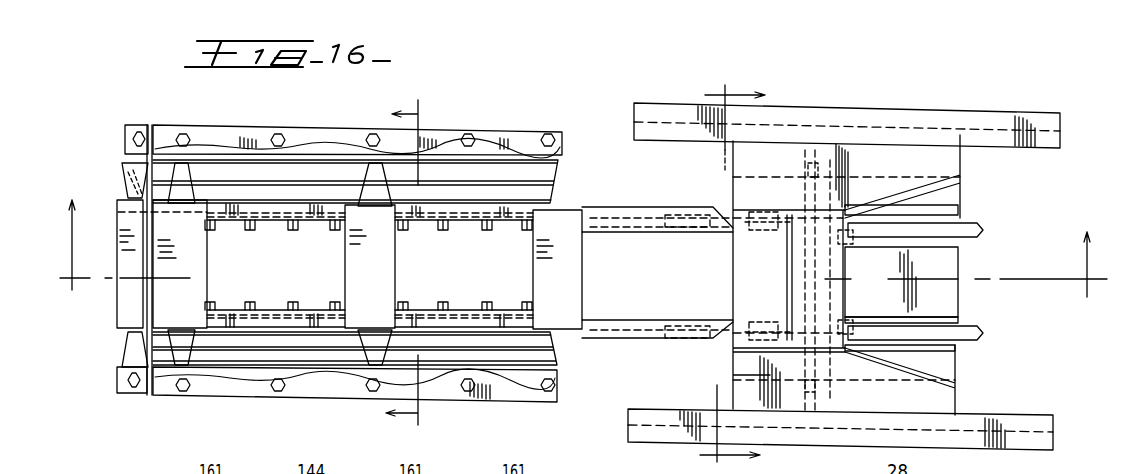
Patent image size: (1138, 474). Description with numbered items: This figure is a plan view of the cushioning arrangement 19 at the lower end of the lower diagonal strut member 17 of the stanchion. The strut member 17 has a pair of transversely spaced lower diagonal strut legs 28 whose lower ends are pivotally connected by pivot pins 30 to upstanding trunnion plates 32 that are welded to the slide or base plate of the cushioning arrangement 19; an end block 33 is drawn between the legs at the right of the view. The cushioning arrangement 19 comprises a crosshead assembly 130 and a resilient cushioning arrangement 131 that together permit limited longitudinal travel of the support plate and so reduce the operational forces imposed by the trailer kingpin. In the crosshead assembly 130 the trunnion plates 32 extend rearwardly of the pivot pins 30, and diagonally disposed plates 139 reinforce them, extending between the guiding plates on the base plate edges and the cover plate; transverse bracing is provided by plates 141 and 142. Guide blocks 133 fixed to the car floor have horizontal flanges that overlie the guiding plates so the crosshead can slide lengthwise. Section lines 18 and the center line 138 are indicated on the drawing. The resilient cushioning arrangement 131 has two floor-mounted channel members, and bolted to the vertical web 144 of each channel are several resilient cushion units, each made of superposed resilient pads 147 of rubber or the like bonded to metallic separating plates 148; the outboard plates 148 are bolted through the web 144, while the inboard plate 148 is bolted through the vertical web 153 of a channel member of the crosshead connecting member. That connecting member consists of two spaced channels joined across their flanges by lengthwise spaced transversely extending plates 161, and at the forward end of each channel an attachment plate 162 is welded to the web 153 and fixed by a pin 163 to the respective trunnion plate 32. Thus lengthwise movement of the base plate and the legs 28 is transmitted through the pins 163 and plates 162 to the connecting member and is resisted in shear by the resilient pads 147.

The lower diagonal strut member 17 is at (577, 255).
The section line 18- 18 is at (726, 274).
The cushioning arrangement 19 is at (966, 82).
The lower diagonal strut legs 28 is at (980, 235).
The pivot pins 30 is at (848, 245).
The trunnion plates 32 is at (955, 215).
The end block 33 is at (958, 268).
The crosshead assembly 130 is at (892, 112).
The resilient cushioning arrangement 131 is at (298, 126).
The guide blocks 133 is at (1037, 122).
The center line 138 is at (966, 278).
The diagonally disposed plates 139 is at (737, 189).
The transverse bracing plate 141 is at (810, 165).
The transverse bracing plate 142 is at (820, 276).
The vertical web 144 is at (120, 152).
The resilient pads 147 is at (544, 210).
The metallic separating plates 148 is at (136, 197).
The vertical web 153 is at (275, 222).
The transversely extending plates 161 is at (195, 278).
The attachment plate 162 is at (698, 231).
The pin 163 is at (761, 212).